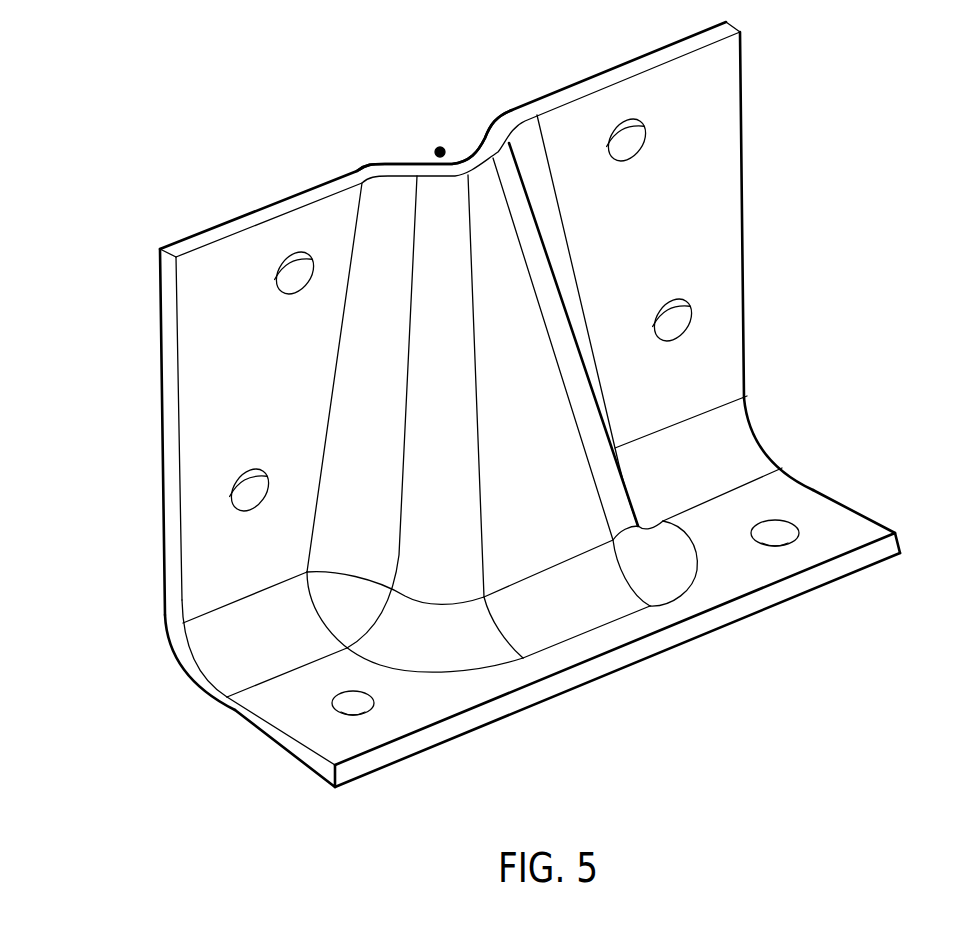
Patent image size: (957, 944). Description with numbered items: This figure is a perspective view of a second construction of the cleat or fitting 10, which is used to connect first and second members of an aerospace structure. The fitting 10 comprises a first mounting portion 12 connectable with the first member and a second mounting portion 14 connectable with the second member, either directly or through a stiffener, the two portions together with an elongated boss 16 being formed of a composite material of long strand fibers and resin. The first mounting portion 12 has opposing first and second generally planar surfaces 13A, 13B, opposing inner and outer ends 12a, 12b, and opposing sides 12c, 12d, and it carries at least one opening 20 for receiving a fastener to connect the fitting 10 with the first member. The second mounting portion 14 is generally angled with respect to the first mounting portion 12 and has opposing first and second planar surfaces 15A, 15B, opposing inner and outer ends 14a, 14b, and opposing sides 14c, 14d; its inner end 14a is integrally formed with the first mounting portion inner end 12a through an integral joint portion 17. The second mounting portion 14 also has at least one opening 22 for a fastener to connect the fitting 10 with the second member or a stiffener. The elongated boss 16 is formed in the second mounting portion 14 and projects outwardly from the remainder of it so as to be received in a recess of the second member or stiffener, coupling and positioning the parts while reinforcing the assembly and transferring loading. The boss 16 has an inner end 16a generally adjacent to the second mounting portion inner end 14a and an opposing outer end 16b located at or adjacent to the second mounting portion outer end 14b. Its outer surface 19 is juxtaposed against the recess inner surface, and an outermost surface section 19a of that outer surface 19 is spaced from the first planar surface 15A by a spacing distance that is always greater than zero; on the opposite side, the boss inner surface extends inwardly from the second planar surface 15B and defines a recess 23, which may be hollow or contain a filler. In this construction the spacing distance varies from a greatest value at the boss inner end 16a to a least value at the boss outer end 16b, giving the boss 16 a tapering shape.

The fitting 10 is at (852, 314).
The first mounting portion 12 is at (398, 767).
The first mounting portion inner end 12a is at (260, 682).
The first mounting portion outer end 12b is at (633, 658).
The first mounting portion side 12c is at (873, 517).
The first mounting portion side 12d is at (277, 743).
The first planar surface of first mounting portion 13A is at (838, 517).
The second planar surface of first mounting portion 13B is at (813, 593).
The second mounting portion 14 is at (141, 401).
The second mounting portion inner end 14a is at (748, 388).
The second mounting portion outer end 14b is at (613, 70).
The second mounting portion side 14c is at (747, 183).
The second mounting portion side 14d is at (170, 483).
The first planar surface of second mounting portion 15A is at (697, 208).
The second planar surface of second mounting portion 15B is at (252, 213).
The elongated boss 16 is at (556, 431).
The boss inner end 16a is at (540, 573).
The boss outer end 16b is at (473, 157).
The integral joint portion 17 is at (735, 457).
The boss outer surface 19 is at (540, 270).
The outermost surface section 19a is at (528, 329).
The opening 20 is at (343, 705).
The opening 22 is at (300, 283).
The recess 23 is at (437, 148).